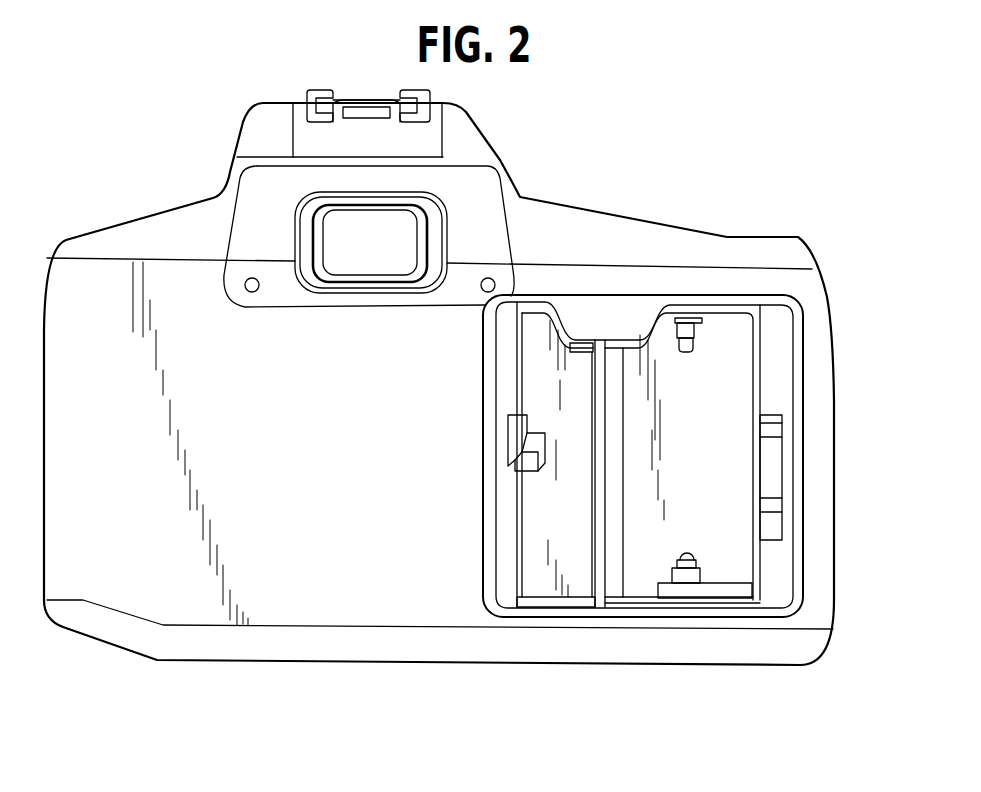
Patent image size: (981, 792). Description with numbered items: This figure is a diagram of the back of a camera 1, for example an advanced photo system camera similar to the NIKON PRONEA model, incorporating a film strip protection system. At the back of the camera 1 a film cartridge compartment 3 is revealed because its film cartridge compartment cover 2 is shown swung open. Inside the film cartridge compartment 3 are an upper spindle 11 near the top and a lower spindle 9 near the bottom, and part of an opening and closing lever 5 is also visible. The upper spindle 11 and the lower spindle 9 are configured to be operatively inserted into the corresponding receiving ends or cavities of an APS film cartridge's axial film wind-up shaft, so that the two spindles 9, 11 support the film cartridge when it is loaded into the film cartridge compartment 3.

The camera 1 is at (608, 235).
The film cartridge compartment cover 2 is at (550, 577).
The film cartridge compartment 3 is at (725, 387).
The opening and closing lever 5 is at (728, 590).
The lower spindle 9 is at (685, 578).
The upper spindle 11 is at (688, 327).